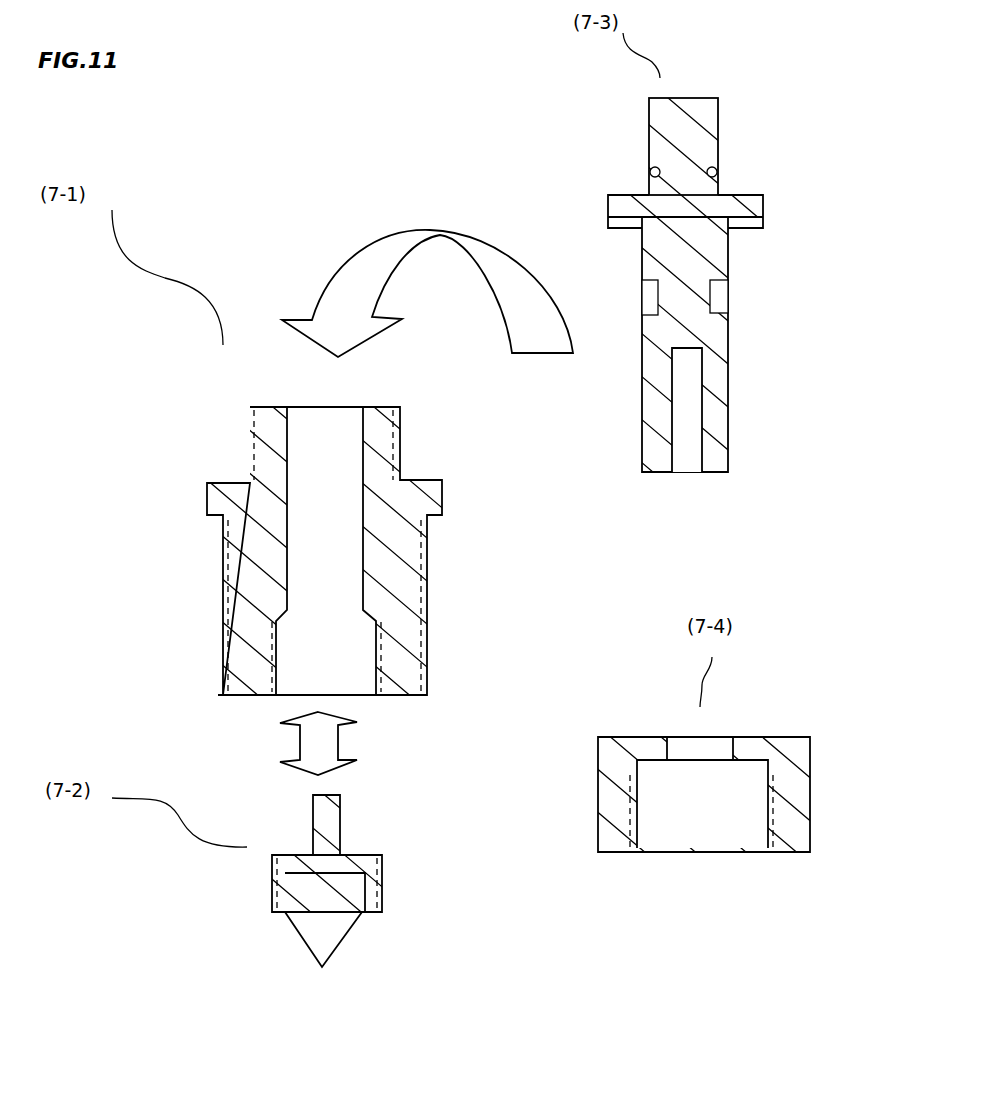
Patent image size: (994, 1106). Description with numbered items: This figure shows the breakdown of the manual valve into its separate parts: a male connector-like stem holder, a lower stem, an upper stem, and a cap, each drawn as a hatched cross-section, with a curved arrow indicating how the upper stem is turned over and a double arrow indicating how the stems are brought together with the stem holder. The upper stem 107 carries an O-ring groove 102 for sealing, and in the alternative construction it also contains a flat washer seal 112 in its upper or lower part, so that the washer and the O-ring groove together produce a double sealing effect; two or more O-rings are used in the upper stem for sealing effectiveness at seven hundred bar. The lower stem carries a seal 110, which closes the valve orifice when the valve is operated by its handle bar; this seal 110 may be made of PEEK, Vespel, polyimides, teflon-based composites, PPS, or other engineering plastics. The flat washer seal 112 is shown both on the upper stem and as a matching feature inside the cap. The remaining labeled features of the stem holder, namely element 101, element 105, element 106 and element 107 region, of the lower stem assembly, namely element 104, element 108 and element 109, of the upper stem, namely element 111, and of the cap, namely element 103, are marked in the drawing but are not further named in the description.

The nozzle body 101 is at (497, 553).
The O-ring groove 102 is at (497, 553).
The holder block 103 is at (690, 865).
The needle assembly 104 is at (497, 553).
The upper cylindrical portion 105 is at (248, 442).
The inner bore 106 is at (263, 662).
The upper stem 107 is at (423, 593).
The collar 108 is at (385, 883).
The shaft 109 is at (343, 830).
The seal 110 is at (347, 945).
The slot 111 is at (705, 408).
The flat washer seal 112 is at (748, 233).